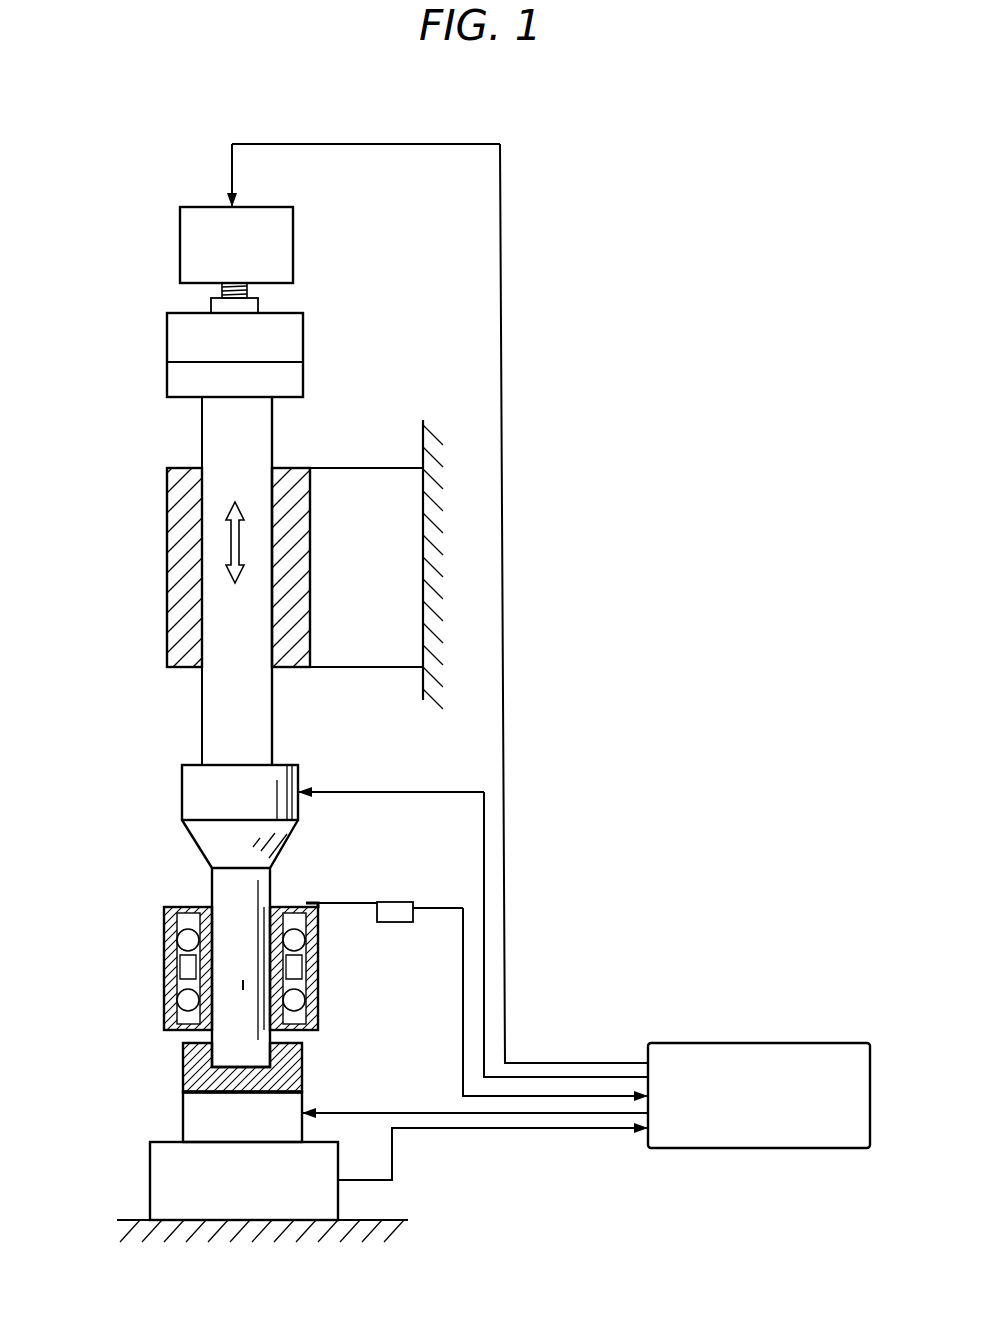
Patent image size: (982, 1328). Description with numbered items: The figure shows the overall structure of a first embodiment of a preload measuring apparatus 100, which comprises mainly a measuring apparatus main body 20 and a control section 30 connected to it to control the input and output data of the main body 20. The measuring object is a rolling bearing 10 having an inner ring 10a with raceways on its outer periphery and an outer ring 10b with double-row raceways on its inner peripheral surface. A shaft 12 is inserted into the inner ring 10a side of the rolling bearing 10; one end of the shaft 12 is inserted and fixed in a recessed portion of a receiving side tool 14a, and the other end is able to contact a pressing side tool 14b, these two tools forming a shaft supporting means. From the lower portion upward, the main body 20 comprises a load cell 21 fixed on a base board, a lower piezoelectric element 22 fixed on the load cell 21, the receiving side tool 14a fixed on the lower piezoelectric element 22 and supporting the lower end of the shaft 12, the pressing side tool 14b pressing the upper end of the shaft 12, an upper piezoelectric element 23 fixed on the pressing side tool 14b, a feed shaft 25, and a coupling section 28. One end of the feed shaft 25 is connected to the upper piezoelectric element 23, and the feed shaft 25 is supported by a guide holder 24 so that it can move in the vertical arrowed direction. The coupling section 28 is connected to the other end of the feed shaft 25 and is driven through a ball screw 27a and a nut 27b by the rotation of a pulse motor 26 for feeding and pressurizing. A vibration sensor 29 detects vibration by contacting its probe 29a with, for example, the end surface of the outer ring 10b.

The preload measuring apparatus 100 is at (562, 316).
The rolling bearing 10 is at (163, 937).
The inner ring 10a is at (262, 935).
The outer ring 10b is at (164, 978).
The shaft 12 is at (212, 888).
The receiving side tool 14a is at (183, 1066).
The pressing side tool 14b is at (288, 846).
The measuring apparatus main body 20 is at (97, 581).
The load cell 21 is at (163, 1178).
The lower piezoelectric element 22 is at (183, 1120).
The upper piezoelectric element 23 is at (182, 785).
The guide holder 24 is at (167, 608).
The feed shaft 25 is at (202, 712).
The pulse motor 26 is at (180, 244).
The ball screw 27a is at (250, 290).
The nut 27b is at (211, 305).
The coupling section 28 is at (166, 336).
The vibration sensor 29 is at (409, 902).
The probe 29a is at (319, 906).
The control section 30 is at (771, 1043).